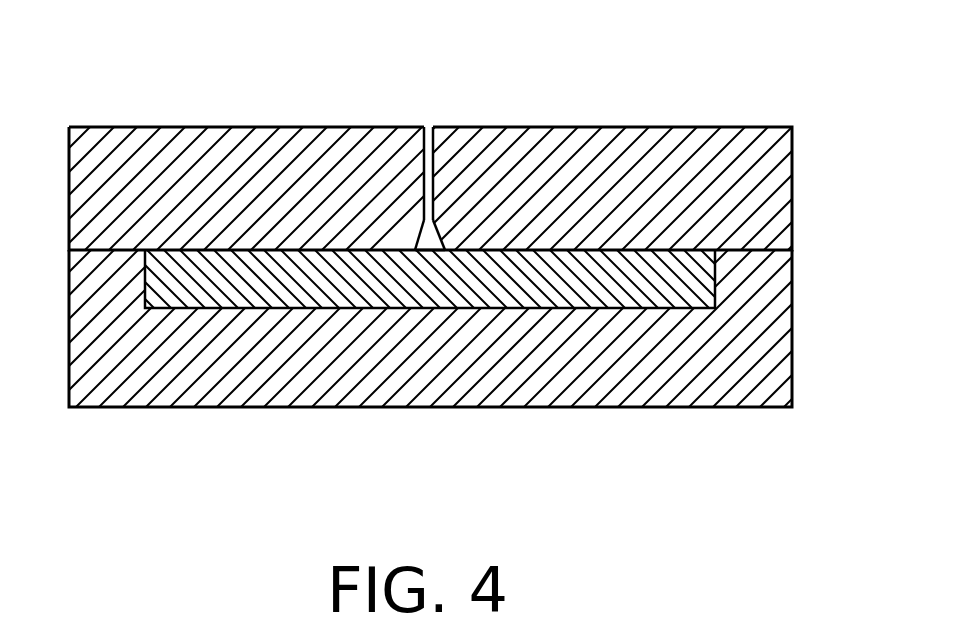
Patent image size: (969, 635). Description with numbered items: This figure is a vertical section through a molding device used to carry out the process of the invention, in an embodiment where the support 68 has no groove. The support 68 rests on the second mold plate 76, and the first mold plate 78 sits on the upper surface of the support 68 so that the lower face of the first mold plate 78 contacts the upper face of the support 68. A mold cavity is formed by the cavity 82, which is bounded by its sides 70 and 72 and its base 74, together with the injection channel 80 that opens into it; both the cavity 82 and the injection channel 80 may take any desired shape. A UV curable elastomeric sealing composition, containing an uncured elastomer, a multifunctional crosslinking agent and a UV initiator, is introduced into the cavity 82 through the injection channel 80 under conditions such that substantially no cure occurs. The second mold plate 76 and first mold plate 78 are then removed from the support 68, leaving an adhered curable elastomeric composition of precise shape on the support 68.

The support 68 is at (665, 282).
The side of cavity 70 is at (445, 242).
The side of cavity 72 is at (418, 249).
The base of cavity 74 is at (428, 252).
The second mold plate 76 is at (730, 366).
The first mold plate 78 is at (723, 179).
The injection channel 80 is at (430, 140).
The cavity 82 is at (428, 252).